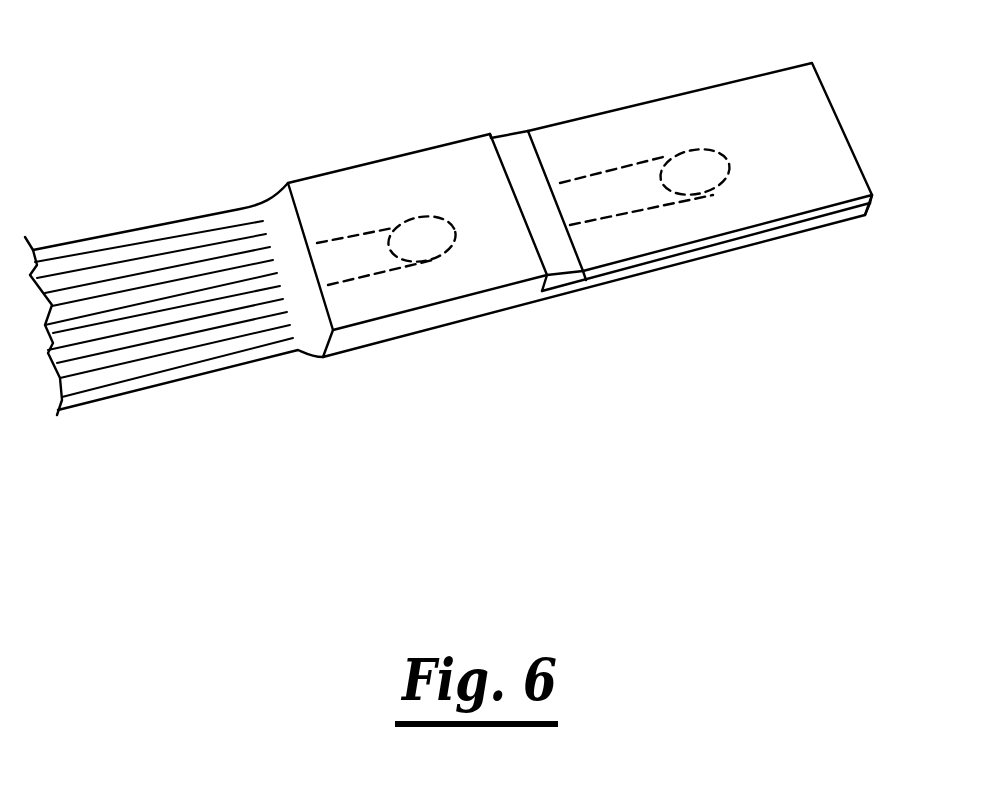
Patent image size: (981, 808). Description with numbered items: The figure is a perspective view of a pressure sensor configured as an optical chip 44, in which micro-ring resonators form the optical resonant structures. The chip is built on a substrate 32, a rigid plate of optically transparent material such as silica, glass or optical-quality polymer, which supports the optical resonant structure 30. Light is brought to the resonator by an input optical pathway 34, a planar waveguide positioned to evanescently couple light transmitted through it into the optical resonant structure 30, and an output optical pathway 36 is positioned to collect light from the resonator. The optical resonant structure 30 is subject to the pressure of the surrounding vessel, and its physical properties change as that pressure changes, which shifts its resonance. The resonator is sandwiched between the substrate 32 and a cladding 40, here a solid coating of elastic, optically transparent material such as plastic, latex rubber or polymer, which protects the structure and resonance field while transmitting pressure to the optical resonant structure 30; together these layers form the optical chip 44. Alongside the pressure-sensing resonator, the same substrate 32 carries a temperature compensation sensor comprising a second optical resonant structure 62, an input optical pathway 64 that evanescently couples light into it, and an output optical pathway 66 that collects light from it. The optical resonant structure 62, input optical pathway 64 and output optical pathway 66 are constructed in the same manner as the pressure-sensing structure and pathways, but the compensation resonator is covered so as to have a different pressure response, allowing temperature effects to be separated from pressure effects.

The optical resonant structure 30 is at (710, 150).
The substrate 32 is at (845, 227).
The input optical pathway 34 is at (604, 169).
The output optical pathway 36 is at (643, 212).
The cladding 40 is at (797, 217).
The optical chip 44 is at (340, 76).
The optical resonant structure 62 is at (457, 243).
The input optical pathway 64 is at (356, 232).
The output optical pathway 66 is at (373, 275).